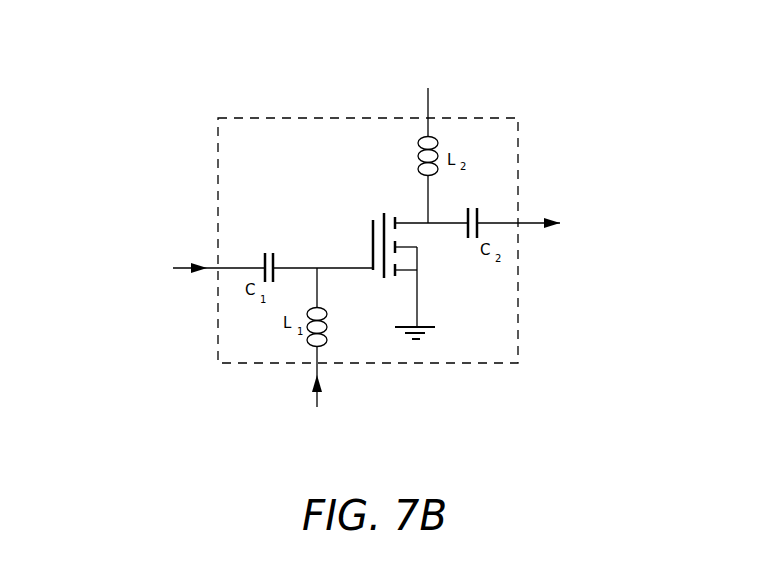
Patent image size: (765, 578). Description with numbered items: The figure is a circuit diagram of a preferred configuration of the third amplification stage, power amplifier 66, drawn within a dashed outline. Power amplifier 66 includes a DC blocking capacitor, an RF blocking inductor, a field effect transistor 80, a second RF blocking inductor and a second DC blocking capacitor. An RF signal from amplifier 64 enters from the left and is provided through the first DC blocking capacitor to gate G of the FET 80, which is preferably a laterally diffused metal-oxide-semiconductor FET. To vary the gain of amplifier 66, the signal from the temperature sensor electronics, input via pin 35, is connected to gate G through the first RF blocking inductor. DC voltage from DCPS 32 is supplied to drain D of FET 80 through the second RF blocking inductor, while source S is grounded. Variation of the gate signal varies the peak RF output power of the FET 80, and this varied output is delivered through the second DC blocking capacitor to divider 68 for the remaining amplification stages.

The power amplifier 66 is at (467, 372).
The field effect transistor 80 is at (345, 215).
The DCPS 32 is at (428, 82).
The amplifier 64 is at (168, 272).
The divider 68 is at (556, 245).
The pin 35 is at (315, 406).